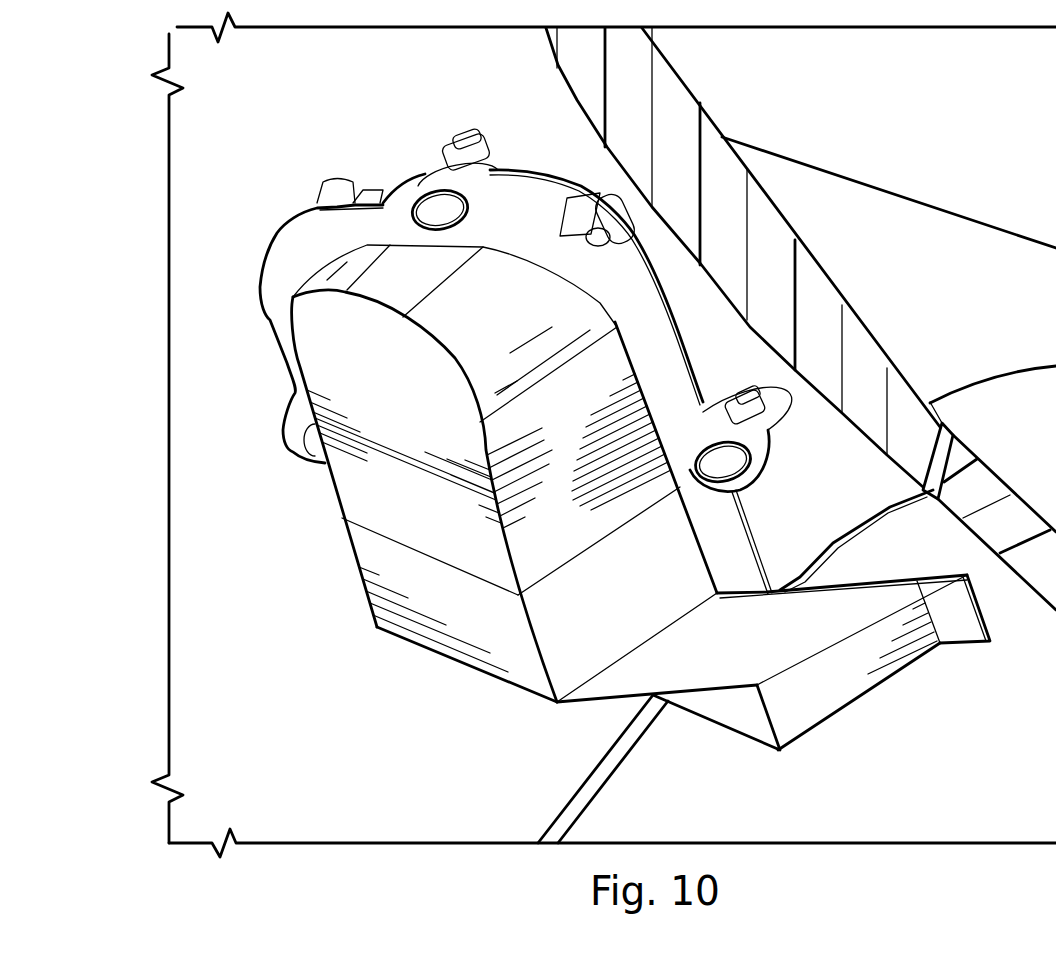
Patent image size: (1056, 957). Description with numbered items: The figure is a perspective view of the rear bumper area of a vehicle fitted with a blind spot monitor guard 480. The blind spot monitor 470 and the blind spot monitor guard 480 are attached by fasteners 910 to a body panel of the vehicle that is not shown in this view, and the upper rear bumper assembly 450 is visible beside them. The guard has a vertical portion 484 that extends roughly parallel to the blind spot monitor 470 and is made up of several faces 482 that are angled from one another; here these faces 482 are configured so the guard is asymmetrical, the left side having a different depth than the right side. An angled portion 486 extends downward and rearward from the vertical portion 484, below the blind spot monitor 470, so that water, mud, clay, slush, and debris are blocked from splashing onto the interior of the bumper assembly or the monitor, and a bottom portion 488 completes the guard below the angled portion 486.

The upper rear bumper assembly 450 is at (276, 113).
The blind spot monitor 470 is at (388, 174).
The blind spot monitor guard 480 is at (287, 615).
The faces 482 is at (380, 287).
The vertical portion 484 is at (342, 487).
The angled portion 486 is at (720, 673).
The bottom portion 488 is at (817, 707).
The fasteners 910 is at (468, 133).